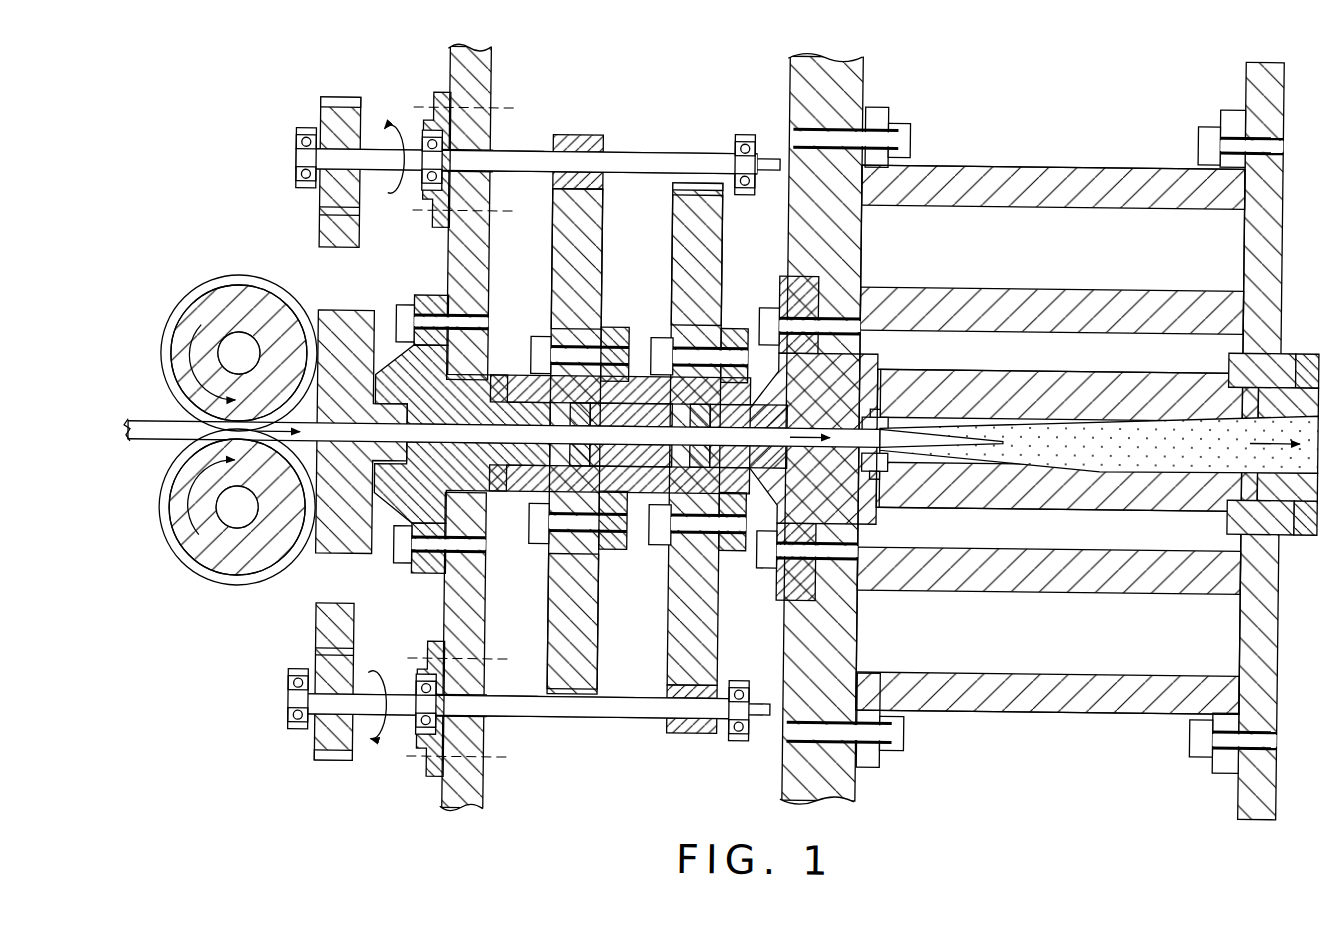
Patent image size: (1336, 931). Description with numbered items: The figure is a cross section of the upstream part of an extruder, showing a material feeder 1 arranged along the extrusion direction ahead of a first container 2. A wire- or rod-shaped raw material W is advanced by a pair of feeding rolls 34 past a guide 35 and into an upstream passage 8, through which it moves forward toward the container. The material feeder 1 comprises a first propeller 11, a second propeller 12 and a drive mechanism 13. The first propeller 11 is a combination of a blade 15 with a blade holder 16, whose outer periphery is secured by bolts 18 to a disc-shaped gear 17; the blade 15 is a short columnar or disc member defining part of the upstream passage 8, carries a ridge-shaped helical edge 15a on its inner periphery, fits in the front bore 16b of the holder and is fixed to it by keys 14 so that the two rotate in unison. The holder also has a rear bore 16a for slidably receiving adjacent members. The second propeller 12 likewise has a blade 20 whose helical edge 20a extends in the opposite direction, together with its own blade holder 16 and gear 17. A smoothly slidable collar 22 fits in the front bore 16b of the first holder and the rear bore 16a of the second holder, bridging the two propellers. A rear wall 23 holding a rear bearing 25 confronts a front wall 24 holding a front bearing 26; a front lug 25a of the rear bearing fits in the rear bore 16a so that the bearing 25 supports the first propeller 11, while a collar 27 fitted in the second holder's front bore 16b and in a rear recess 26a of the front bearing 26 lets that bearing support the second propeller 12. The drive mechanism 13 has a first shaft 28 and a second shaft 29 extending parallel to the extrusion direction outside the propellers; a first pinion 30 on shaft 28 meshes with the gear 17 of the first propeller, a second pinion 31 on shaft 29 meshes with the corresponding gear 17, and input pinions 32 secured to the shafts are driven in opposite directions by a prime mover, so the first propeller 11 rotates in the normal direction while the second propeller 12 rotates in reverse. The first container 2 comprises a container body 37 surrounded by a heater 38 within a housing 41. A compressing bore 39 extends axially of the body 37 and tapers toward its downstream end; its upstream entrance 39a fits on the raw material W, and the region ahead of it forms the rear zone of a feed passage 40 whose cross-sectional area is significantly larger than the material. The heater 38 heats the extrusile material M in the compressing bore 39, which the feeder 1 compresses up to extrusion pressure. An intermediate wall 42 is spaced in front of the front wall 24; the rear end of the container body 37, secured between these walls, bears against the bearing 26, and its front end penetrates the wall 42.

The material feeder 1 is at (646, 70).
The first container 2 is at (1000, 88).
The upstream passage 8 is at (426, 434).
The first propeller 11 is at (550, 270).
The second propeller 12 is at (672, 220).
The drive mechanism 13 is at (668, 147).
The keys 14 is at (578, 330).
The blade 15 is at (565, 500).
The helical edge 15a is at (610, 552).
The blade holder 16 is at (656, 394).
The rear axial bore 16a is at (572, 452).
The front axial bore 16b is at (592, 464).
The gear 17 is at (700, 252).
The bolts 18 is at (540, 350).
The blade 20 is at (712, 468).
The helical edge 20a is at (728, 560).
The collar 22 is at (628, 396).
The rear wall 23 is at (483, 74).
The front wall 24 is at (800, 90).
The rear bearing 25 is at (398, 345).
The front lug 25a is at (441, 305).
The front bearing 26 is at (862, 275).
The rear recess 26a is at (780, 468).
The collar 27 is at (790, 412).
The first shaft 28 is at (518, 150).
The second shaft 29 is at (530, 714).
The first pinion 30 is at (582, 133).
The second pinion 31 is at (683, 730).
The input pinions 32 is at (360, 120).
The feeding rolls 34 is at (213, 582).
The guide 35 is at (332, 310).
The container body 37 is at (1046, 490).
The heater 38 is at (984, 585).
The compressing bore 39 is at (1100, 455).
The entrance 39a is at (897, 478).
The feed passage 40 is at (1113, 428).
The housing 41 is at (1033, 706).
The intermediate wall 42 is at (1250, 236).
The raw material W is at (143, 420).
The extrusile material M is at (1170, 455).